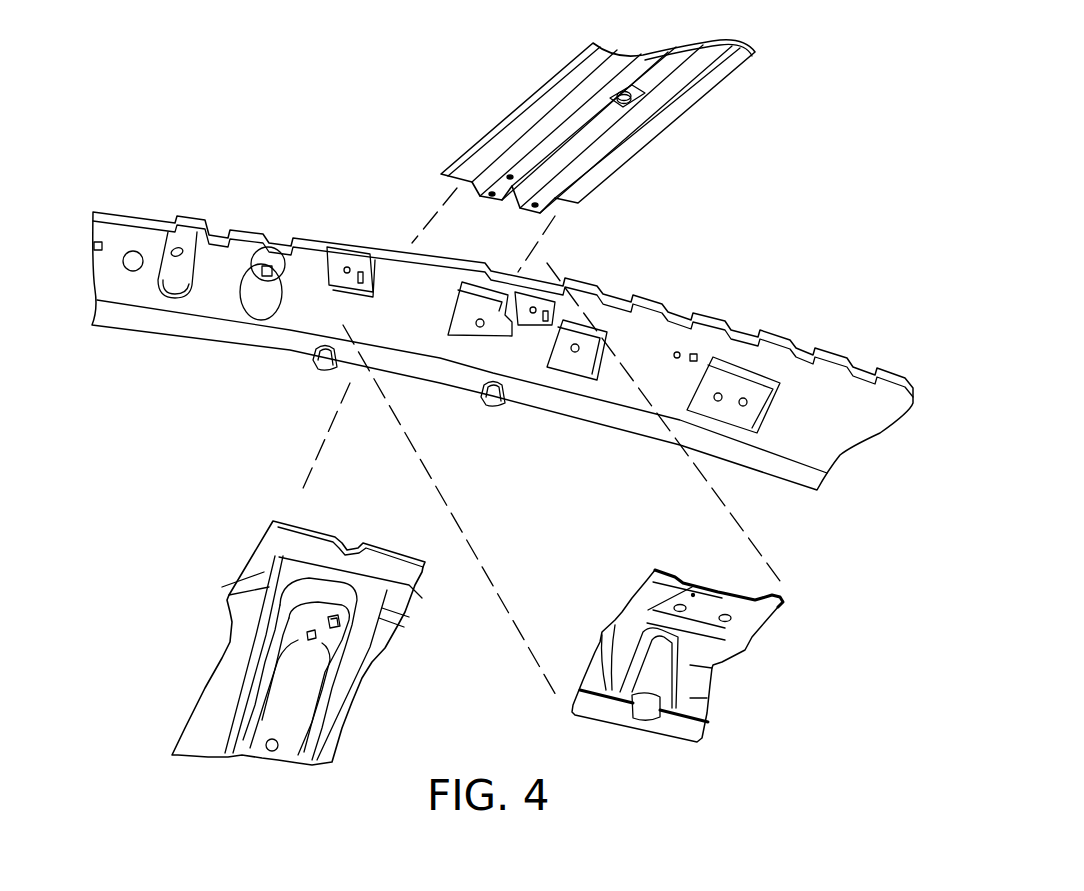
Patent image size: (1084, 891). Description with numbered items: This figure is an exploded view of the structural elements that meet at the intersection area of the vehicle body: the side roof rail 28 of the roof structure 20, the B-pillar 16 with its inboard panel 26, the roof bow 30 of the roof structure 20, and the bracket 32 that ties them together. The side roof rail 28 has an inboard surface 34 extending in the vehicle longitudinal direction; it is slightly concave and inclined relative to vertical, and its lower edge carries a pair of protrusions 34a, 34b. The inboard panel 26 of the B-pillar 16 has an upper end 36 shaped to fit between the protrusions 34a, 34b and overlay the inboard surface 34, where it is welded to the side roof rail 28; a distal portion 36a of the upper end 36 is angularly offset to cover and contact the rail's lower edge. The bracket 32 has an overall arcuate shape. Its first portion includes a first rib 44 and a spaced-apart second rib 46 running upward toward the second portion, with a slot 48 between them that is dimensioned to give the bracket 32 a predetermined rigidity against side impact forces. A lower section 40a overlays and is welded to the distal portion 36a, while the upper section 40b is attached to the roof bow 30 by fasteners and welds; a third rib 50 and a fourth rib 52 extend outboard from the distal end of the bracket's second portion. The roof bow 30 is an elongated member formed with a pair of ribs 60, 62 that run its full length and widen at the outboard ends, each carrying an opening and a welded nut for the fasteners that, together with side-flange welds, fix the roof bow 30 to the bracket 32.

The B-pillar 16 is at (316, 643).
The roof structure 20 is at (502, 351).
The inboard panel 26 is at (365, 683).
The side roof rail 28 is at (843, 423).
The roof bow 30 is at (596, 128).
The bracket 32 is at (697, 659).
The inboard surface 34 is at (613, 387).
The protrusion 34a is at (320, 365).
The protrusion 34b is at (493, 405).
The upper end 36 is at (262, 563).
The distal portion 36a is at (405, 572).
The lower section 40a is at (690, 733).
The upper section 40b is at (773, 605).
The first rib 44 is at (620, 675).
The second rib 46 is at (690, 688).
The slot 48 is at (633, 718).
The third rib 50 is at (700, 600).
The fourth rib 52 is at (733, 610).
The rib 60 is at (502, 187).
The rib 62 is at (555, 187).